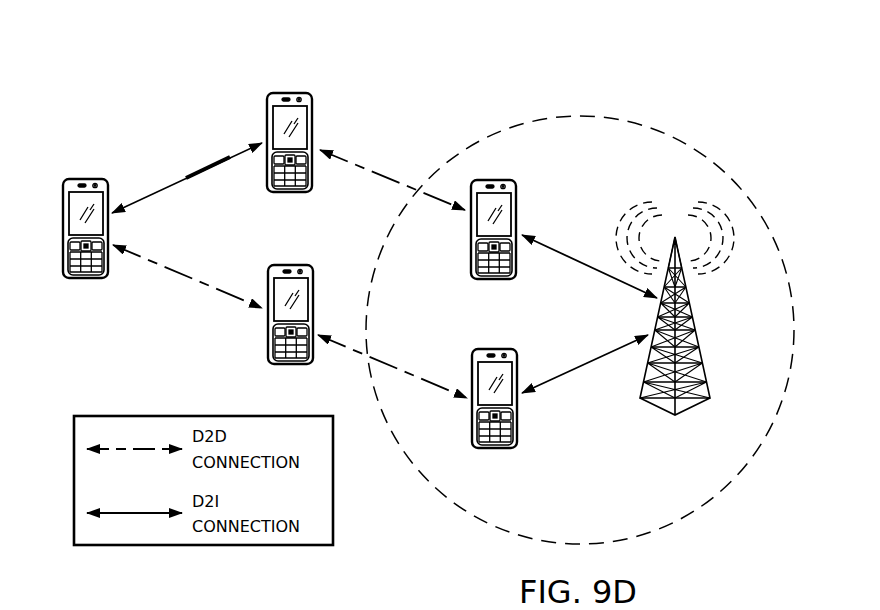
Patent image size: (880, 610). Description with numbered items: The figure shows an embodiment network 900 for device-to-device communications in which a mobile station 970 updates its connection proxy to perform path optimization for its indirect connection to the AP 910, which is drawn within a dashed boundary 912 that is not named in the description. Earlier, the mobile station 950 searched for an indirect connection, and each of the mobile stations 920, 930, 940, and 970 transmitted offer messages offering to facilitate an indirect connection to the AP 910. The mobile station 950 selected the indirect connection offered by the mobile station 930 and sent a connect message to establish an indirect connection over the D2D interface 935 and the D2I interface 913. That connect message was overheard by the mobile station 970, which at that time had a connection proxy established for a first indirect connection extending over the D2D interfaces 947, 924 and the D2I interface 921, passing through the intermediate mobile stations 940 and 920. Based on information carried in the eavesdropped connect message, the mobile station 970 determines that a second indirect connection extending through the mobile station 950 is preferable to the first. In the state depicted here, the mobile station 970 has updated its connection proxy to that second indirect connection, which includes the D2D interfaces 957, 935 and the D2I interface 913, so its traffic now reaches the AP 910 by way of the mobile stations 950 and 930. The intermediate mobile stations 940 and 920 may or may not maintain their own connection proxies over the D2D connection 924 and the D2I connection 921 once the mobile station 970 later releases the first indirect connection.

The network 900 is at (680, 104).
The AP 910 is at (693, 403).
The coverage area of base station 912 is at (742, 178).
The D2I interface 913 is at (583, 366).
The mobile station 920 is at (516, 202).
The D2I interface 921 is at (582, 263).
The D2D interface 924 is at (391, 176).
The mobile station 930 is at (495, 450).
The D2D interface 935 is at (392, 365).
The mobile station 940 is at (291, 93).
The D2D interface 947 is at (188, 175).
The mobile station 950 is at (268, 338).
The D2D interface 957 is at (188, 276).
The mobile station 970 is at (85, 178).